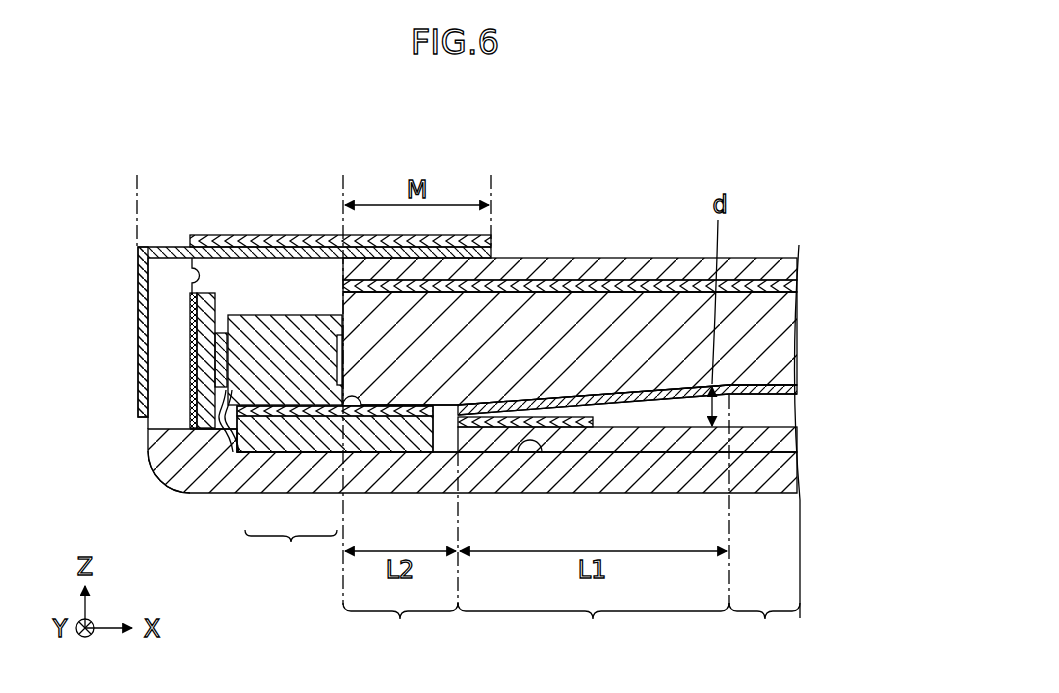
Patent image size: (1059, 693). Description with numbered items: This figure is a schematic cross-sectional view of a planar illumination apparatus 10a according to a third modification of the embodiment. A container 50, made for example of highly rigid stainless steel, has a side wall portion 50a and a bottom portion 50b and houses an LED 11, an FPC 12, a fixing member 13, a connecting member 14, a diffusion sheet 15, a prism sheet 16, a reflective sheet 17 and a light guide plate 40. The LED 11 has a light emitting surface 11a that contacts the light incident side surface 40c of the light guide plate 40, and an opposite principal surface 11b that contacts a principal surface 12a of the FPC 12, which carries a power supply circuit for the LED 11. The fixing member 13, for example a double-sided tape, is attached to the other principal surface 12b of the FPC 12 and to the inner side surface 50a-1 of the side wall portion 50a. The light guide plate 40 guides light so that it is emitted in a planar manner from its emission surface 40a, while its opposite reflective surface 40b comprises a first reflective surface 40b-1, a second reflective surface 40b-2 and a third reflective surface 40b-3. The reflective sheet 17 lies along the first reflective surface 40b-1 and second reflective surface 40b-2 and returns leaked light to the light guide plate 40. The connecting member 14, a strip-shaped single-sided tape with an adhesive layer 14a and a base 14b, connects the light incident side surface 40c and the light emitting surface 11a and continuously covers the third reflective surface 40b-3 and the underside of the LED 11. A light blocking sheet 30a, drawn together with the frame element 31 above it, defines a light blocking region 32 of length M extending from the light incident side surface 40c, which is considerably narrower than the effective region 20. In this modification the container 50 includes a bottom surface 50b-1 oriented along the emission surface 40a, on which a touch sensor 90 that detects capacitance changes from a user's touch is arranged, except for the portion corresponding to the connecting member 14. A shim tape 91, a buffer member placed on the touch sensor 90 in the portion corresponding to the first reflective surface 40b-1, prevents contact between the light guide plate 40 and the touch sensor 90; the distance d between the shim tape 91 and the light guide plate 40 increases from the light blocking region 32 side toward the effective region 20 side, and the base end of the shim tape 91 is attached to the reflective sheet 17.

The planar illumination apparatus 10a is at (624, 175).
The LED 11 is at (227, 452).
The light emitting surface 11a is at (345, 393).
The principal surface 11b is at (193, 491).
The FPC 12 is at (190, 393).
The principal surface 12a is at (218, 436).
The principal surface 12b is at (195, 314).
The fixing member 13 is at (205, 346).
The connecting member 14 is at (335, 493).
The adhesive layer 14a is at (266, 412).
The base 14b is at (313, 434).
The diffusion sheet 15 is at (790, 288).
The prism sheet 16 is at (790, 272).
The reflective sheet 17 is at (790, 388).
The effective region 20 is at (578, 246).
The light blocking sheet 30a is at (246, 252).
The frame top plate 31 is at (289, 246).
The light blocking region 32 is at (455, 186).
The light guide plate 40 is at (790, 335).
The emission surface 40a is at (677, 290).
The reflective surface 40b is at (757, 394).
The first reflective surface 40b-1 is at (593, 519).
The second reflective surface 40b-2 is at (767, 519).
The third reflective surface 40b-3 is at (400, 529).
The light incident side surface 40c is at (337, 357).
The container 50 is at (790, 473).
The side wall portion 50a is at (166, 374).
The inner side surface 50a-1 is at (193, 275).
The bottom portion 50b is at (662, 476).
The bottom surface 50b-1 is at (536, 446).
The touch sensor 90 is at (790, 432).
The shim tape 91 is at (583, 421).